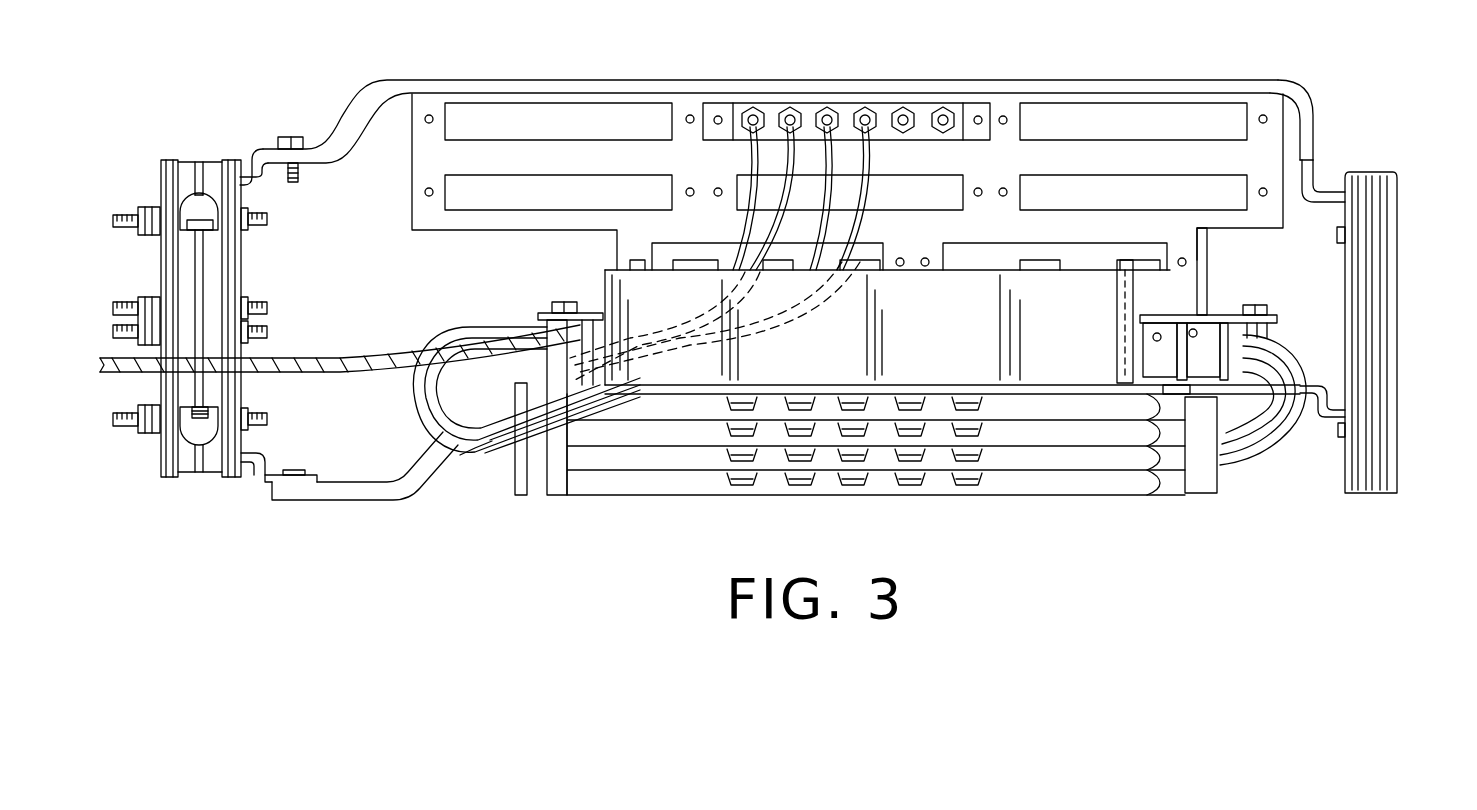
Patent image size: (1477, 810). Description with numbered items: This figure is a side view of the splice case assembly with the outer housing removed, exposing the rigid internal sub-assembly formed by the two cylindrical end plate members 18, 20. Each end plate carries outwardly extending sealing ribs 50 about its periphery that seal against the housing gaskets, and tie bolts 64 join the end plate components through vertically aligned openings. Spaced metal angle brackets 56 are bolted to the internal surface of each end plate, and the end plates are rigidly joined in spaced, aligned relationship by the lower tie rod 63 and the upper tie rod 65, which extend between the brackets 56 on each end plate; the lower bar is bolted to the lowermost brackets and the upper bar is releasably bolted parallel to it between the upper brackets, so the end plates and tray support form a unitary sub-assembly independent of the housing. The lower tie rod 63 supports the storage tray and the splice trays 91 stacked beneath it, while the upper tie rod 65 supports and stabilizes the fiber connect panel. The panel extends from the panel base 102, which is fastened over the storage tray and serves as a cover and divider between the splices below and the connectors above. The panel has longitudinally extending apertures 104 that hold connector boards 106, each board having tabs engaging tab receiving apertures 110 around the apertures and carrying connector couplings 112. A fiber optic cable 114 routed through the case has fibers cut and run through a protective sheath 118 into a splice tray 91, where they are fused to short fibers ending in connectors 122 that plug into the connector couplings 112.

The cylindrical end plate member 18 is at (157, 440).
The cylindrical end plate member 20 is at (1405, 224).
The sealing ribs 50 is at (227, 477).
The metal angle brackets 56 is at (258, 160).
The lower tie rod 63 is at (325, 490).
The tie bolts 64 is at (193, 213).
The upper tie rod 65 is at (352, 97).
The splice trays 91 is at (665, 478).
The panel base 102 is at (1222, 315).
The apertures 104 is at (1090, 197).
The connector board 106 is at (845, 110).
The tab receiving aperture 110 is at (432, 113).
The connector couplings 112 is at (945, 113).
The fiber optic cable 114 is at (412, 345).
The protective sheath 118 is at (737, 183).
The connector 122 is at (787, 110).